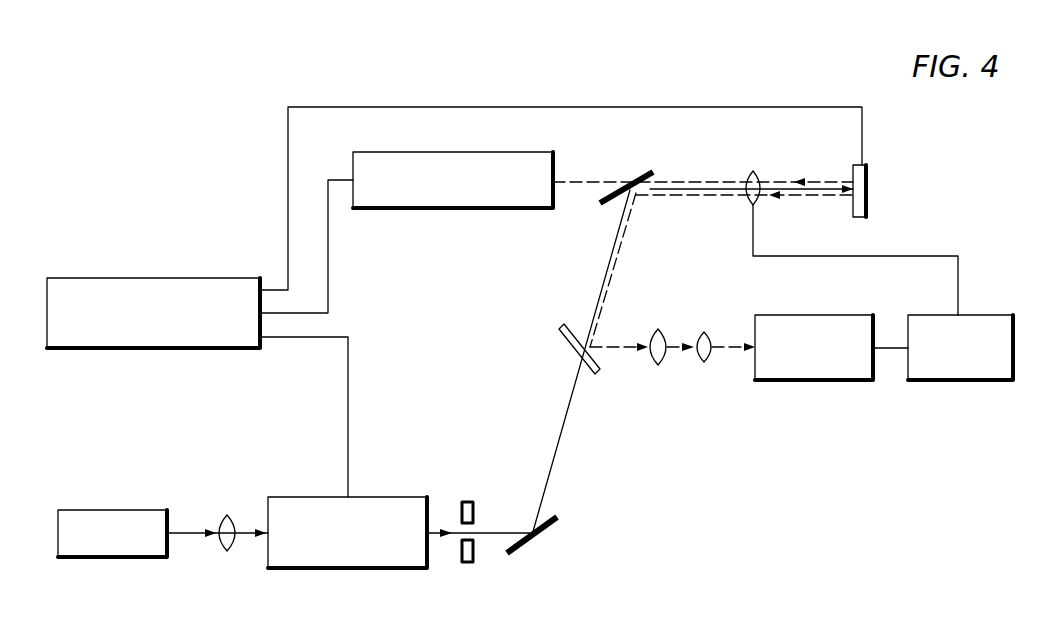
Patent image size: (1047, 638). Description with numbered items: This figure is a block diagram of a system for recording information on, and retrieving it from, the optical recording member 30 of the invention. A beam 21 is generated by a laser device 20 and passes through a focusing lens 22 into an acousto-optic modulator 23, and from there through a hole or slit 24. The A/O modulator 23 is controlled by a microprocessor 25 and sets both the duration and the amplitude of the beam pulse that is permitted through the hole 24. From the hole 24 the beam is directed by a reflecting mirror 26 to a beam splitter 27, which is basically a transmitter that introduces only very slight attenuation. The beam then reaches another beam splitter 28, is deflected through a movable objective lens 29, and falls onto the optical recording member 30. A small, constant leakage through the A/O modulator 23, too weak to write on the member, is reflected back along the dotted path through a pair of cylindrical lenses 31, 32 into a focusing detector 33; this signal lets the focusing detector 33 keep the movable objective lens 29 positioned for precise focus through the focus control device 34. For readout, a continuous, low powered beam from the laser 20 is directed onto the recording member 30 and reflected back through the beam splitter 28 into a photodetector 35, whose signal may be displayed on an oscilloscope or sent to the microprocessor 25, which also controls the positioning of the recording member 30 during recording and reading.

The laser device 20 is at (141, 510).
The beam 21 is at (192, 532).
The focusing lens 22 is at (226, 552).
The acousto-optic modulator 23 is at (372, 497).
The hole or slit 24 is at (473, 503).
The microprocessor 25 is at (233, 278).
The reflecting mirror 26 is at (527, 548).
The beam splitter 27 is at (565, 326).
The beam splitter 28 is at (649, 168).
The movable objective lens 29 is at (753, 168).
The optical recording member 30 is at (867, 187).
The cylindrical lens 31 is at (660, 329).
The cylindrical lens 32 is at (704, 363).
The focusing detector 33 is at (806, 315).
The focus control device 34 is at (975, 315).
The photodetector 35 is at (522, 152).